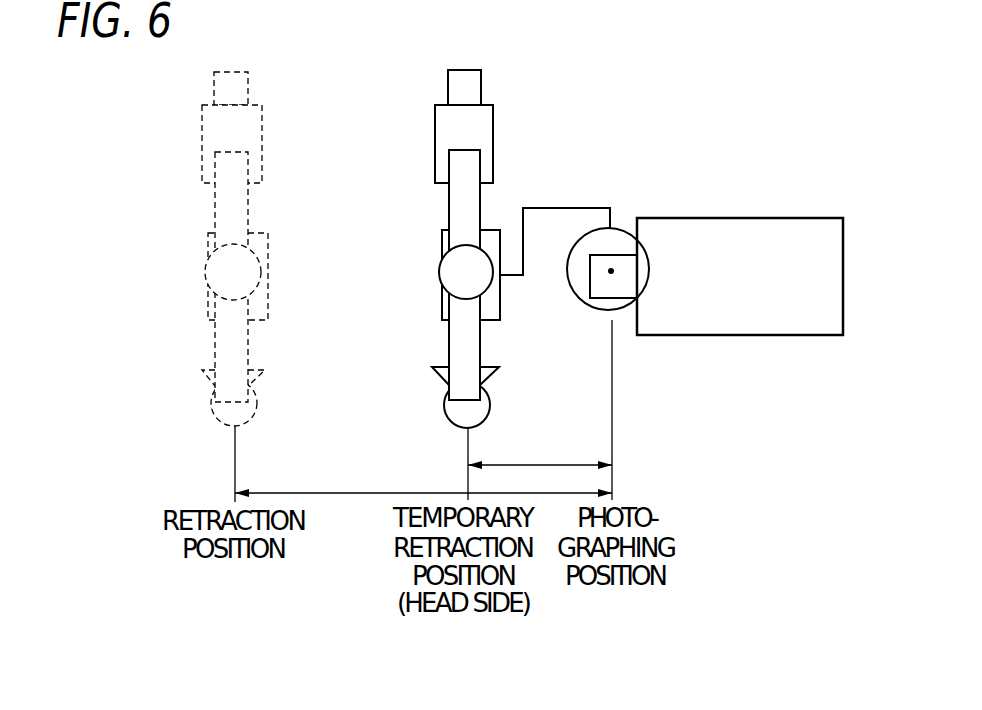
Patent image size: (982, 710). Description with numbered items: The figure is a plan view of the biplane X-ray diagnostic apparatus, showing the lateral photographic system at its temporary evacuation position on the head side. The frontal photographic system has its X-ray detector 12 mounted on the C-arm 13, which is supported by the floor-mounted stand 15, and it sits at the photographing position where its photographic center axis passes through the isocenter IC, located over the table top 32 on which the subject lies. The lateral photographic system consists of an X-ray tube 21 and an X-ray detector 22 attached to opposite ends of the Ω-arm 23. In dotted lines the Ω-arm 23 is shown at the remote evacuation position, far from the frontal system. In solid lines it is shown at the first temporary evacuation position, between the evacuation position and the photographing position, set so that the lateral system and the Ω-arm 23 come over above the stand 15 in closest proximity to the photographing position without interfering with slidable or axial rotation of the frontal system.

The X-ray detector 12 is at (622, 227).
The C-arm 13 is at (566, 207).
The stand 15 is at (500, 310).
The X-ray tube 21 is at (258, 408).
The X-ray detector 22 is at (262, 160).
The Ω-arm 23 is at (270, 258).
The table top 32 is at (752, 335).
The isocenter IC is at (611, 271).